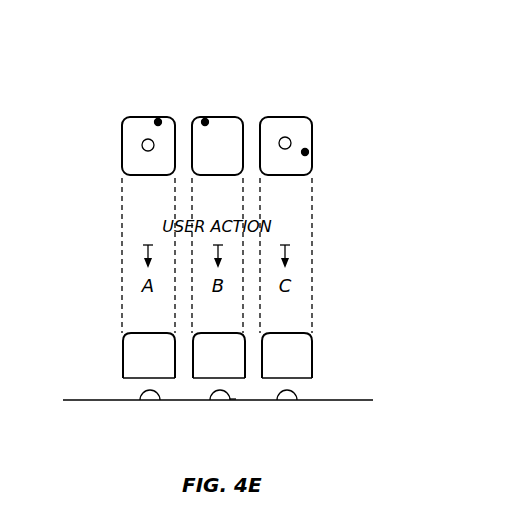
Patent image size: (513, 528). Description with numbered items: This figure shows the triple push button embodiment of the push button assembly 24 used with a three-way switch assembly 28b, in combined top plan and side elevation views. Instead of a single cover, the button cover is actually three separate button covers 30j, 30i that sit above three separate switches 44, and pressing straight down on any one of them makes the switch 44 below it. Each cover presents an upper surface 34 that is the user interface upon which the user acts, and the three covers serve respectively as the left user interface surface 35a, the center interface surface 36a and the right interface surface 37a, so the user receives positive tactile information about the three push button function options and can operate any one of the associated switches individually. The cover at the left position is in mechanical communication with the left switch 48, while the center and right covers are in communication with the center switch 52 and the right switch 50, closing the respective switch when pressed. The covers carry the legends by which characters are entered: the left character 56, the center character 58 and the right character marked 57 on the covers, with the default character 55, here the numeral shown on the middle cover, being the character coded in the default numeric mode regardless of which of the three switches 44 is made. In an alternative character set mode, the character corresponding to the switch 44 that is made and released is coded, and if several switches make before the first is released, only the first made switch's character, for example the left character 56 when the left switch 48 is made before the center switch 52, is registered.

The push button assembly 24 is at (45, 182).
The three-way switch assembly 28b is at (343, 400).
The button cover 30i is at (232, 215).
The button cover 30j is at (212, 235).
The upper surface 34 is at (250, 135).
The left user interface surface 35a is at (121, 247).
The center interface surface 36a is at (229, 237).
The right interface surface 37a is at (307, 236).
The switch 44 is at (148, 405).
The left switch 48 is at (109, 384).
The right switch 50 is at (331, 379).
The center switch 52 is at (250, 413).
The default character 55 is at (214, 159).
The left character 56 is at (127, 83).
The button B 57 is at (195, 81).
The center character 58 is at (304, 81).